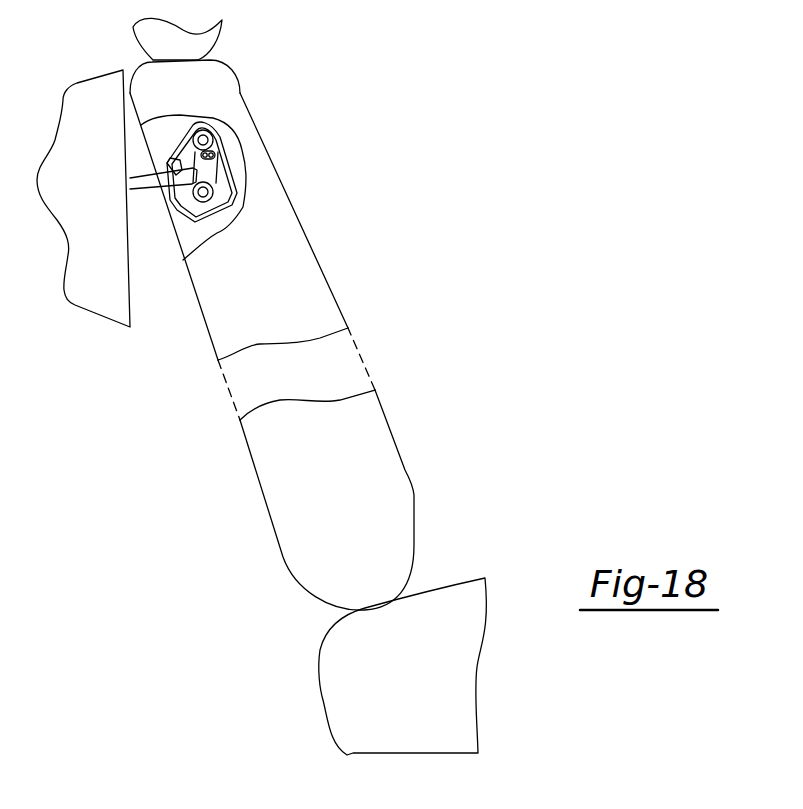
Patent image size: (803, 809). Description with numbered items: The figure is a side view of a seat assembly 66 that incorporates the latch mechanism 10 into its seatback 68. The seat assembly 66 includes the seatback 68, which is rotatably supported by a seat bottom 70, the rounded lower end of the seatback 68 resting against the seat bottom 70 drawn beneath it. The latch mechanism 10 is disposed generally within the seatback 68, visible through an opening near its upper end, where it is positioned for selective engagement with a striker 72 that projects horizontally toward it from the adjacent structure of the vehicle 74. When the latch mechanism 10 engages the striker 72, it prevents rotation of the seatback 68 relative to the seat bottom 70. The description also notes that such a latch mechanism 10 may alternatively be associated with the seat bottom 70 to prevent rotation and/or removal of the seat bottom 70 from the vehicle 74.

The latch mechanism 10 is at (241, 160).
The seat assembly 66 is at (492, 371).
The seatback 68 is at (292, 282).
The seat bottom 70 is at (467, 590).
The striker 72 is at (153, 195).
The vehicle 74 is at (85, 95).